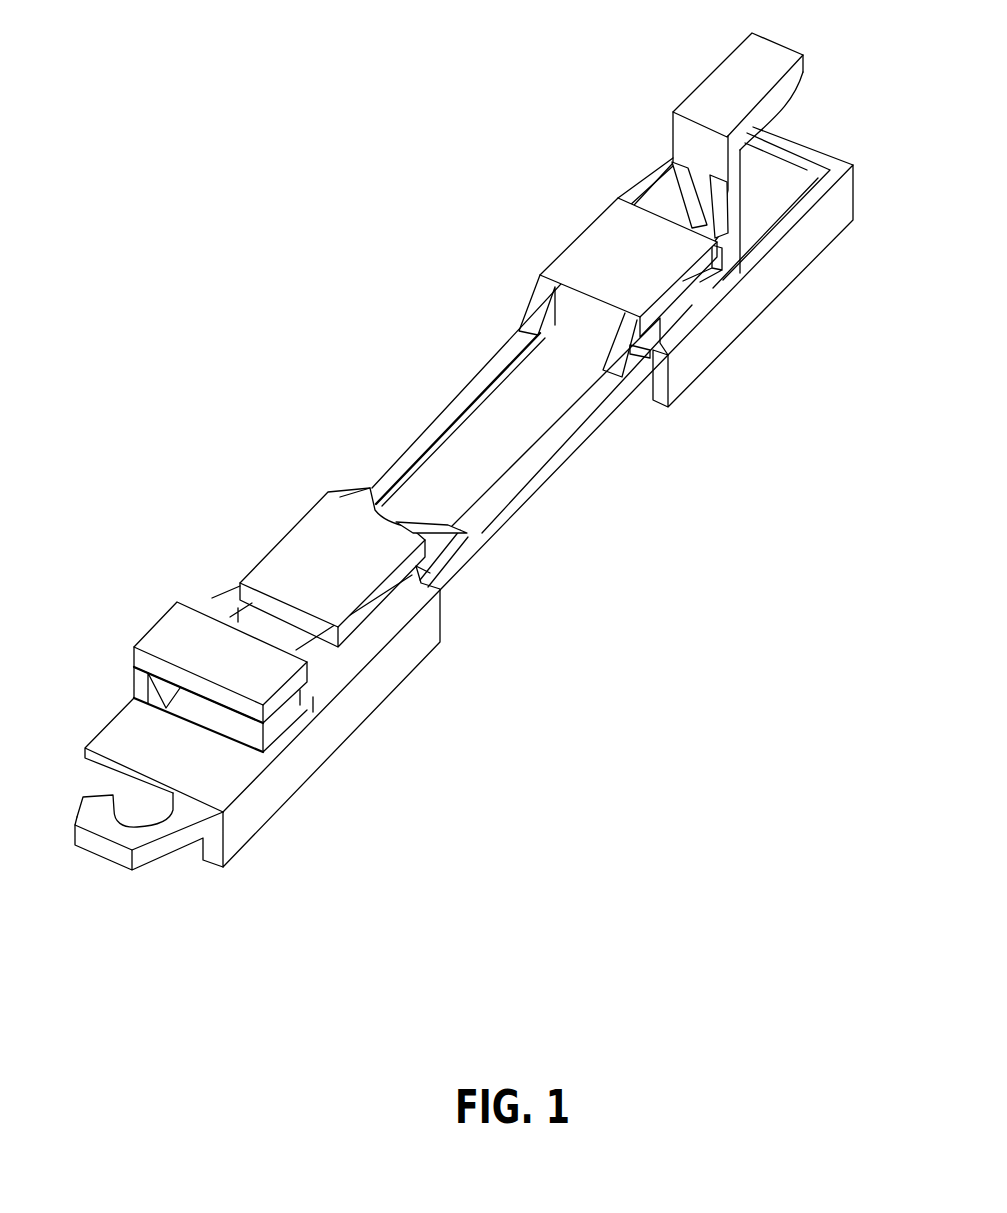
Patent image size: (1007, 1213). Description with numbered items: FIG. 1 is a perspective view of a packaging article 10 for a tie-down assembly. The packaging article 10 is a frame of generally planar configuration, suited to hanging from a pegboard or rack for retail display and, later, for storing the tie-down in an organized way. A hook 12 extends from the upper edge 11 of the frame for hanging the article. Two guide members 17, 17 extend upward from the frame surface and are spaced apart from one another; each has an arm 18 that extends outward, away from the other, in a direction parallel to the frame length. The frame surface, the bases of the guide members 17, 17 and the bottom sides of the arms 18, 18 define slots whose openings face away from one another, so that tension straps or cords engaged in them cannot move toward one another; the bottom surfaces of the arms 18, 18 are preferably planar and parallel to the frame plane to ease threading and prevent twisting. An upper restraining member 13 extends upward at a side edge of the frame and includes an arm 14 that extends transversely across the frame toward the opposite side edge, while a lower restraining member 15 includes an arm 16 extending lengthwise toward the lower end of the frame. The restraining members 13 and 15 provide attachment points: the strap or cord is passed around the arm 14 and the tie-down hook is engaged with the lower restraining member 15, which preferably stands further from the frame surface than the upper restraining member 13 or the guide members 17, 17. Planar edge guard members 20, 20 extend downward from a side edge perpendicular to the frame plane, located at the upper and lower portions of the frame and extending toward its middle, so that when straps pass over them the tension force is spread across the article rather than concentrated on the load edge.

The packaging article 10 is at (306, 285).
The upper edge 11 is at (86, 757).
The hook 12 is at (163, 848).
The upper restraining member 13 is at (138, 687).
The arm 14 is at (170, 630).
The lower restraining member 15 is at (730, 213).
The arm 16 is at (805, 60).
The guide member 17 is at (637, 350).
The arm 18 is at (597, 257).
The edge guard member 20 is at (738, 312).